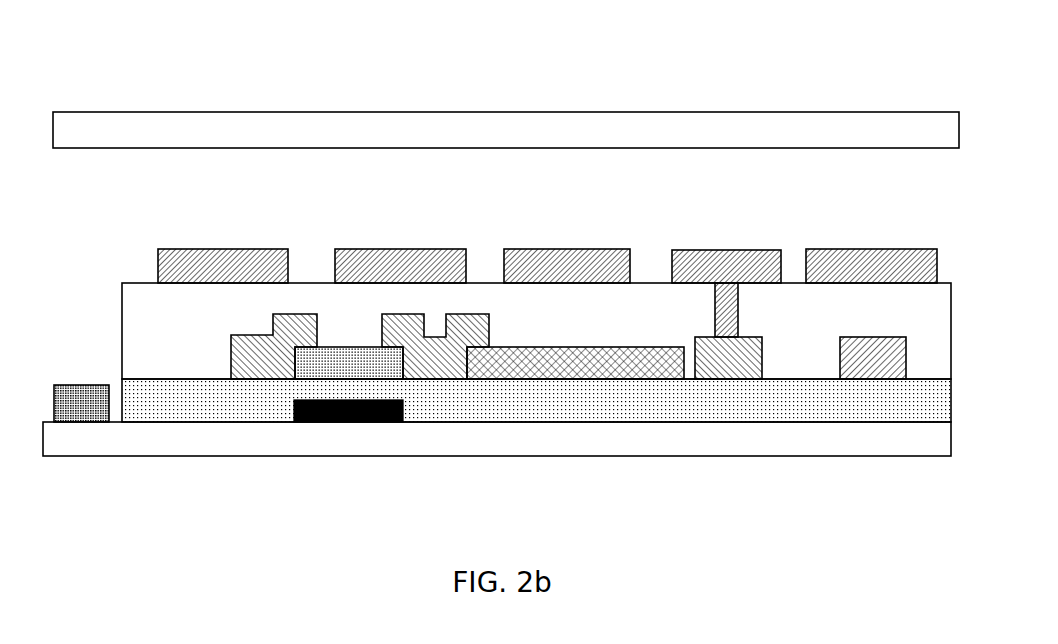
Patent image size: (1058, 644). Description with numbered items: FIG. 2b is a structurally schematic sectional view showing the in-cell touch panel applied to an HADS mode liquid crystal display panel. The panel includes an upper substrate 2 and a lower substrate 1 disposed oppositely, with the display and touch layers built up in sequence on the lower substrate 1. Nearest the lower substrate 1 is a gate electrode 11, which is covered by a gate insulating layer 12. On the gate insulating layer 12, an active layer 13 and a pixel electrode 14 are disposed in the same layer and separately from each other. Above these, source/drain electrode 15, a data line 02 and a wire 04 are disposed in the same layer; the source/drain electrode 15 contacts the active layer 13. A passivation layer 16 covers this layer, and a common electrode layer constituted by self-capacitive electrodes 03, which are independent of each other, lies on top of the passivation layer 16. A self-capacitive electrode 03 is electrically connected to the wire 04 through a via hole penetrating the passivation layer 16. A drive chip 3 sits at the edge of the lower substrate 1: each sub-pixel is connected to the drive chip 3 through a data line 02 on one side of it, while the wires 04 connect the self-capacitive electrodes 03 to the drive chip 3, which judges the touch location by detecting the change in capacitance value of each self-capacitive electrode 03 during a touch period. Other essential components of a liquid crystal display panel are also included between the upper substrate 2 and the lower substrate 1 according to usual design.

The lower substrate 1 is at (518, 443).
The upper substrate 2 is at (660, 135).
The drive chip 3 is at (81, 402).
The gate electrode 11 is at (332, 423).
The gate insulating layer 12 is at (430, 401).
The active layer 13 is at (360, 362).
The pixel electrode 14 is at (597, 357).
The source/drain electrode 15 is at (287, 335).
The passivation layer 16 is at (617, 313).
The self-capacitive electrode 03 is at (873, 260).
The wire 04 is at (728, 358).
The data line 02 is at (873, 358).